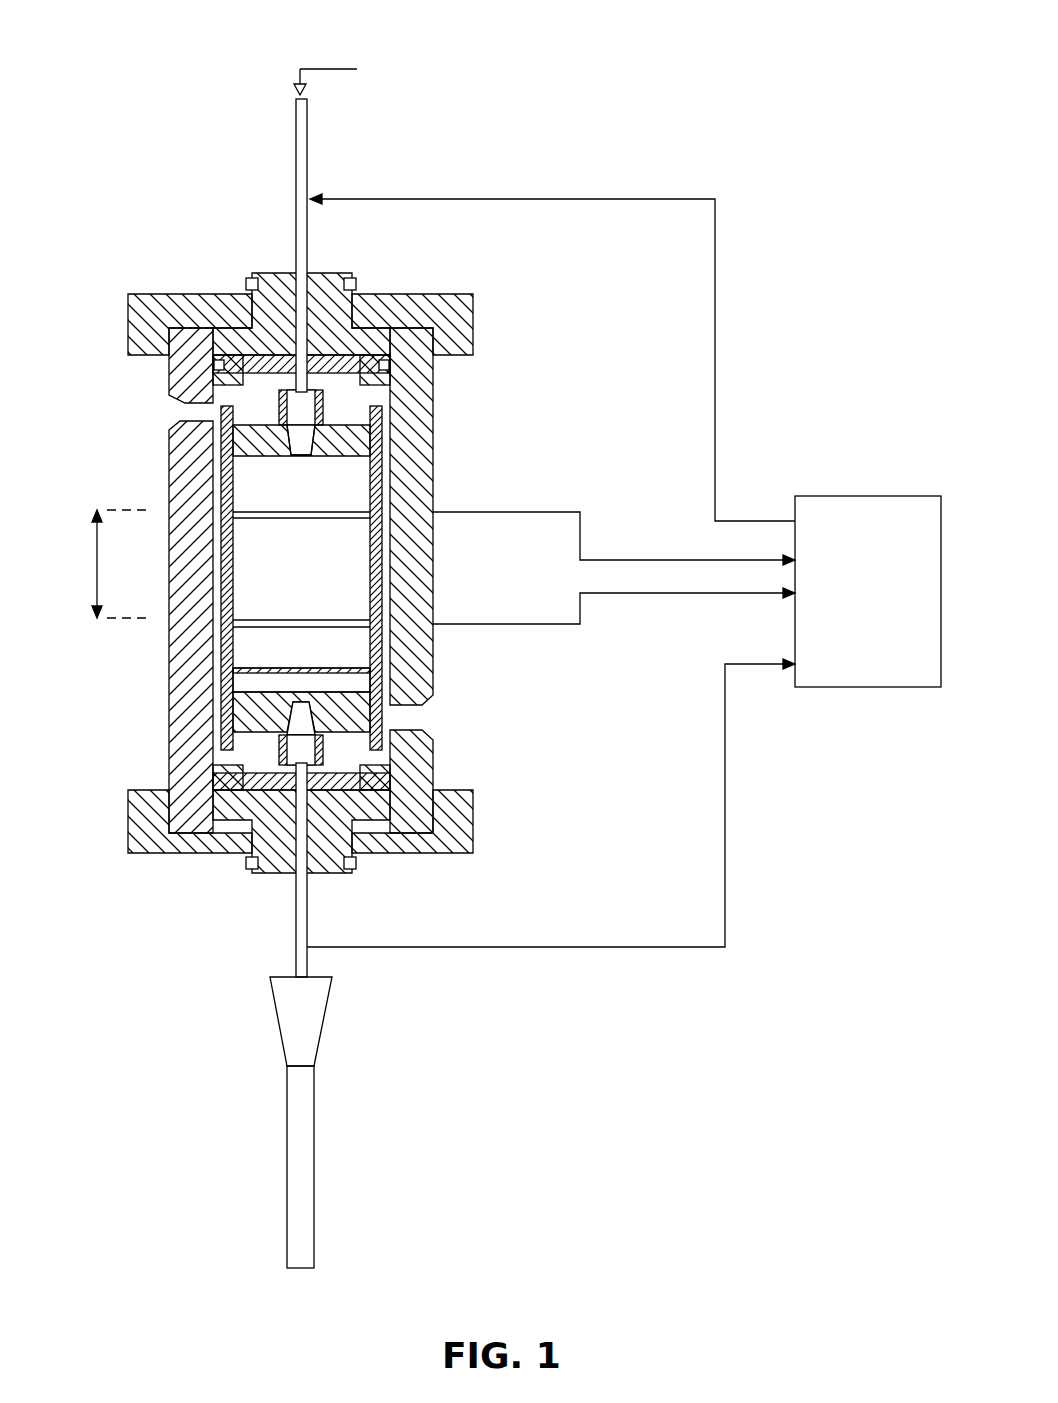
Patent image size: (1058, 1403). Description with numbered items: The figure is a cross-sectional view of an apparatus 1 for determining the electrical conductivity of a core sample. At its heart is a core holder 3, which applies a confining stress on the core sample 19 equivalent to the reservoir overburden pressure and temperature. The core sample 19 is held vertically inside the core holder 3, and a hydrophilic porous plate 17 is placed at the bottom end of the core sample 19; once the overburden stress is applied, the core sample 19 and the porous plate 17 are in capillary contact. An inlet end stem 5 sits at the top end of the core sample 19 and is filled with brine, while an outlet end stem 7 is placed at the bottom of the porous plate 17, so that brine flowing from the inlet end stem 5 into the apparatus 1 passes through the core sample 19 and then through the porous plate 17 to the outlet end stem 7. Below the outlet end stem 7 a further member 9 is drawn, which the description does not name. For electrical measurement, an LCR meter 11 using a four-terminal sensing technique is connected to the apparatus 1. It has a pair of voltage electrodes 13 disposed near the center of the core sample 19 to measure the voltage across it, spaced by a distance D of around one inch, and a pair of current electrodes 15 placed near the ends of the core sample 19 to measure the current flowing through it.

The apparatus 1 is at (185, 205).
The core holder 3 is at (188, 515).
The inlet end stem 5 is at (330, 68).
The outlet end stem 7 is at (296, 917).
The actuator 9 is at (314, 1167).
The LCR meter 11 is at (884, 603).
The voltage electrodes 13 is at (645, 595).
The current electrodes 15 is at (621, 199).
The hydrophilic porous plate 17 is at (245, 678).
The core sample 19 is at (317, 585).
The distance D is at (95, 577).